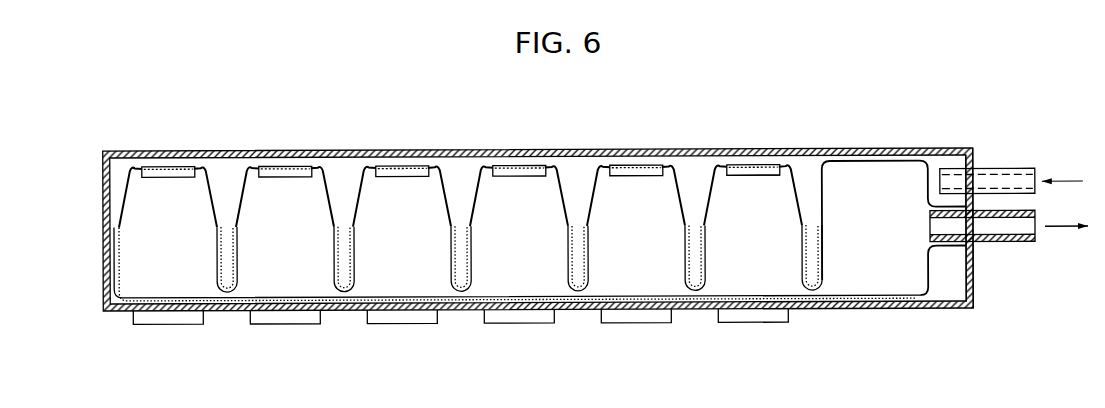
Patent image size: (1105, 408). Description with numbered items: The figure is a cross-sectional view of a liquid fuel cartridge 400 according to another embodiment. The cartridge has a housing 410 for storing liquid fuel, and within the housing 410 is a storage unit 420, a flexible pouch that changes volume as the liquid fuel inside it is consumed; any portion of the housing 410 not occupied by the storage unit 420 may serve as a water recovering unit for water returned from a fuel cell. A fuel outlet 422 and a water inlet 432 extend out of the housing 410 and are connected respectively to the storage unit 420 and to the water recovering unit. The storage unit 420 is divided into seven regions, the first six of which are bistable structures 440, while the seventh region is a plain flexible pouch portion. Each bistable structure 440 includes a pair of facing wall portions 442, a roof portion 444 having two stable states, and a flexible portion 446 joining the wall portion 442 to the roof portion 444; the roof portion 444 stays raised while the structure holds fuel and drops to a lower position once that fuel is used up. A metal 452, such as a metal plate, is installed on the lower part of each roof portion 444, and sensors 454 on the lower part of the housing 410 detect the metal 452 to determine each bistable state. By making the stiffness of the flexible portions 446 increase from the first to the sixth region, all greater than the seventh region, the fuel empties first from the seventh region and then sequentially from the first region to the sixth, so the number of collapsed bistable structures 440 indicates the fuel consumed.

The liquid fuel cartridge 400 is at (287, 102).
The housing 410 is at (865, 309).
The storage unit 420 is at (935, 309).
The fuel outlet 422 is at (1012, 243).
The water inlet 432 is at (1018, 170).
The bistable structure 440 is at (762, 187).
The wall portion 442 is at (687, 291).
The roof portion 444 is at (762, 131).
The flexible portion 446 is at (809, 165).
The metal 452 is at (750, 207).
The sensor 454 is at (757, 323).